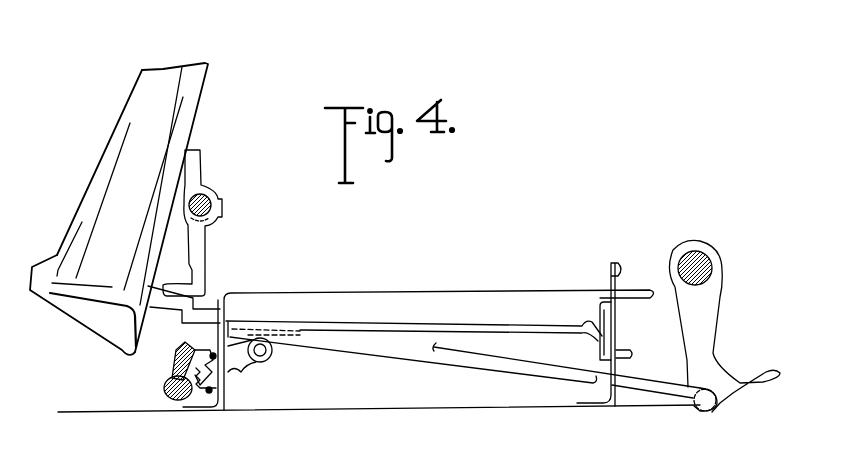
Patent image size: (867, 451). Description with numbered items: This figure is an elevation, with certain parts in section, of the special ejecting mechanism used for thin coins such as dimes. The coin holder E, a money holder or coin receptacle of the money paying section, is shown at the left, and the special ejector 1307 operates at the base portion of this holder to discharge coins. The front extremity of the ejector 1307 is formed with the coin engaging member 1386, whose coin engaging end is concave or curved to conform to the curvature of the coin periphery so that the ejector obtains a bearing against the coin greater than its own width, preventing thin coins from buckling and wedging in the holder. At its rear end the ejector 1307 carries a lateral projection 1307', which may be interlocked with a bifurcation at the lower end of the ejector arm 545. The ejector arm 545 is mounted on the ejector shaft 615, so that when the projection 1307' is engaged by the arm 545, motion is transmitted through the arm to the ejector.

The coin holder E is at (166, 78).
The coin engaging member 1386 is at (177, 311).
The ejector 1307 is at (465, 367).
The lateral projection 1307' is at (674, 416).
The ejector arm 545 is at (708, 321).
The ejector shaft 615 is at (690, 264).